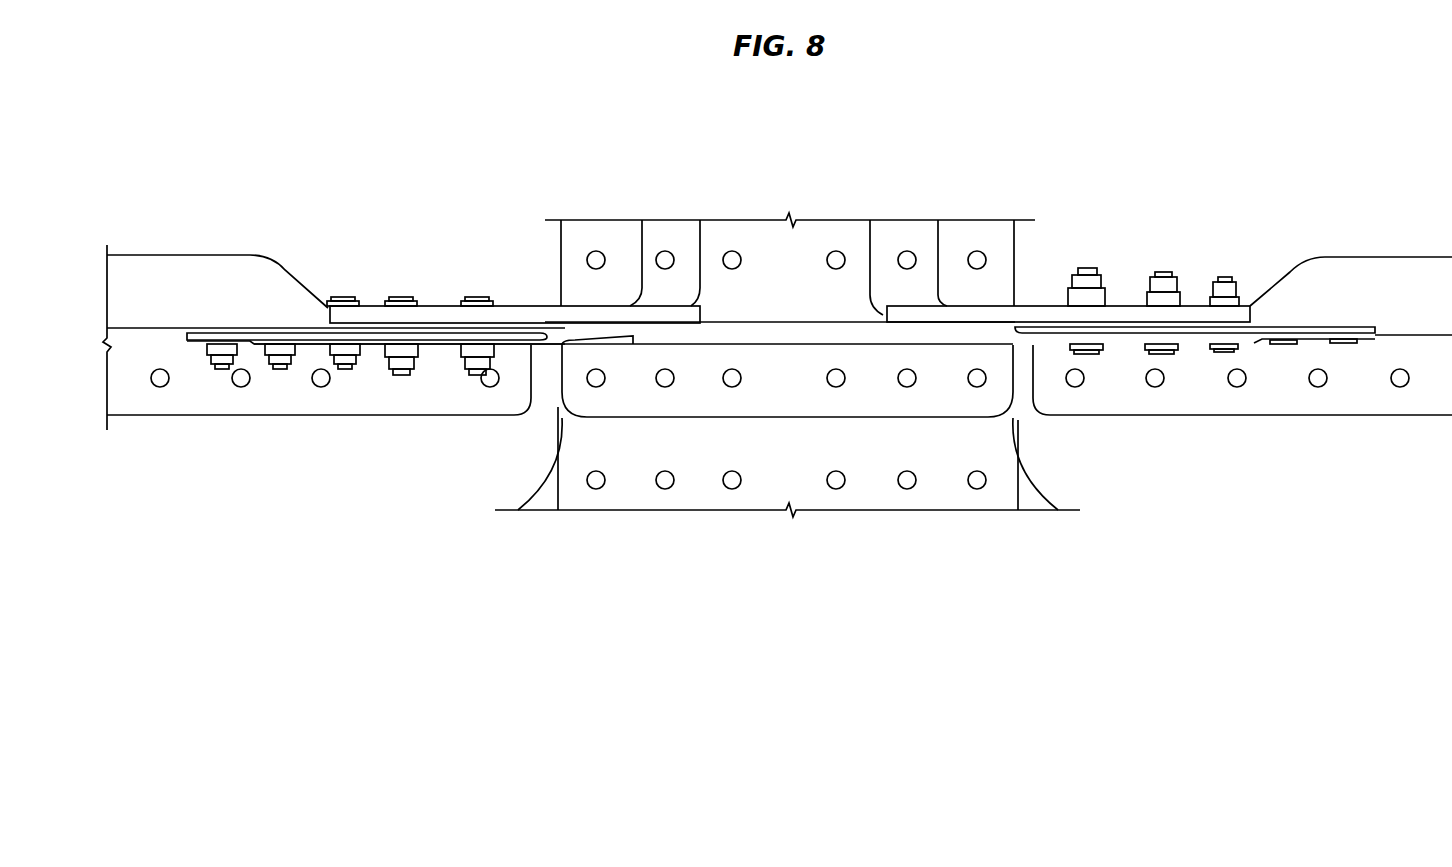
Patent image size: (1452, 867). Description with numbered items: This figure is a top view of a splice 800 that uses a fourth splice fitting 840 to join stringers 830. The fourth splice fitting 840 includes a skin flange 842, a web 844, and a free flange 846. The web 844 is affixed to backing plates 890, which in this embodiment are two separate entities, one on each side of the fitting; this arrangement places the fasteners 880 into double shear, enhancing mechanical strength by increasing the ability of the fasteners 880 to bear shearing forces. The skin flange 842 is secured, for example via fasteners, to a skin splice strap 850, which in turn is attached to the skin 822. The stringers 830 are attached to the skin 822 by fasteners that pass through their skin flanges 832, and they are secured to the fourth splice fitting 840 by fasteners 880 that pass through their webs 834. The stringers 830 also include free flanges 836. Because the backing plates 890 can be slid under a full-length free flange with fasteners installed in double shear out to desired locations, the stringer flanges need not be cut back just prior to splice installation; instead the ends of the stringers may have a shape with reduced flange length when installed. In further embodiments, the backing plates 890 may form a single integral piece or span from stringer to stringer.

The splice 800 is at (684, 572).
The skin 822 is at (1095, 465).
The stringers 830 is at (334, 345).
The skin flanges 832 is at (298, 400).
The webs 834 is at (154, 340).
The free flanges 836 is at (218, 275).
The fourth splice fitting 840 is at (667, 445).
The skin flange 842 is at (872, 373).
The web 844 is at (798, 352).
The free flange 846 is at (865, 333).
The skin splice strap 850 is at (842, 220).
The fasteners 880 is at (343, 297).
The backing plates 890 is at (436, 306).